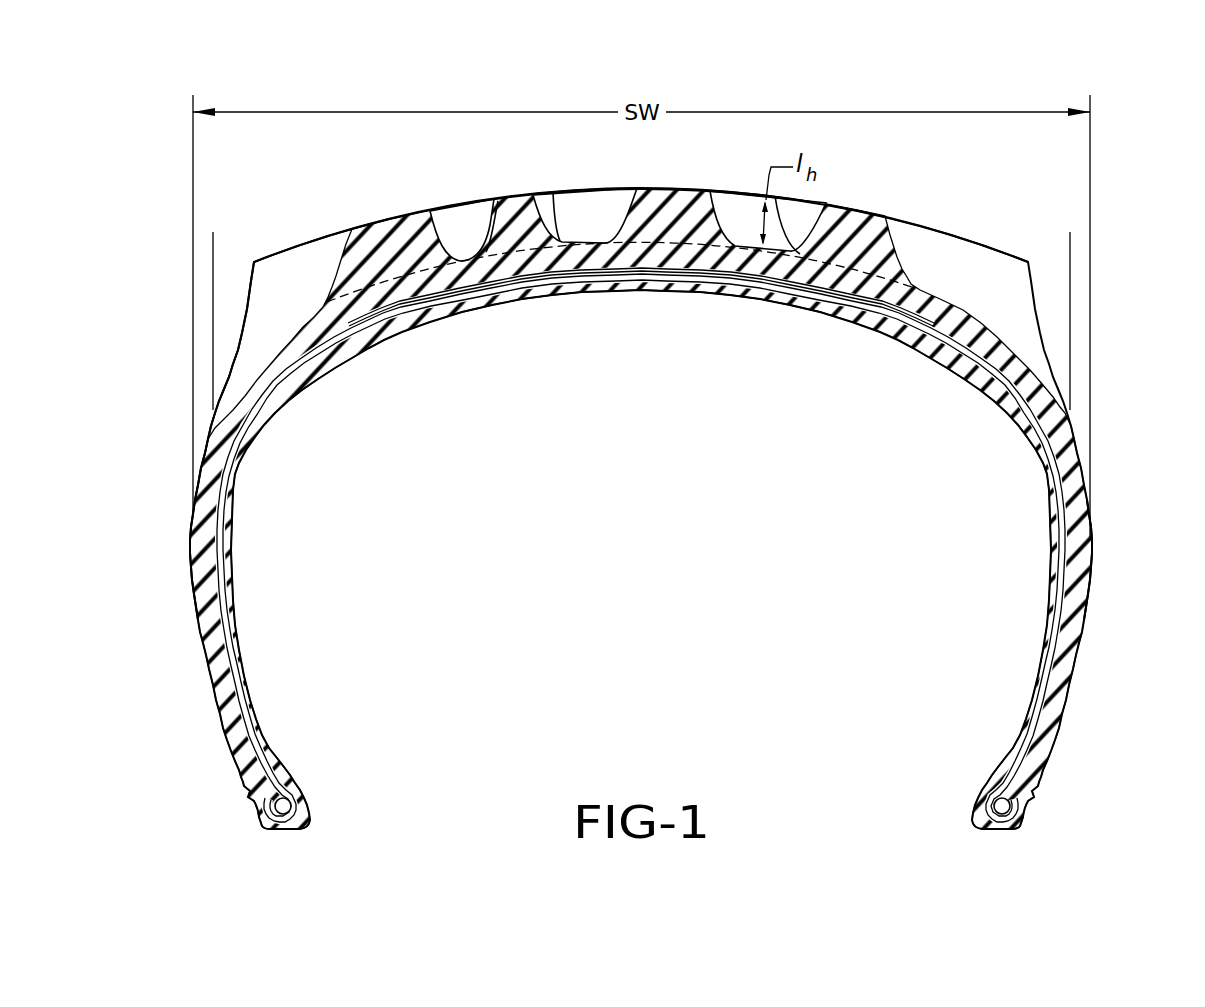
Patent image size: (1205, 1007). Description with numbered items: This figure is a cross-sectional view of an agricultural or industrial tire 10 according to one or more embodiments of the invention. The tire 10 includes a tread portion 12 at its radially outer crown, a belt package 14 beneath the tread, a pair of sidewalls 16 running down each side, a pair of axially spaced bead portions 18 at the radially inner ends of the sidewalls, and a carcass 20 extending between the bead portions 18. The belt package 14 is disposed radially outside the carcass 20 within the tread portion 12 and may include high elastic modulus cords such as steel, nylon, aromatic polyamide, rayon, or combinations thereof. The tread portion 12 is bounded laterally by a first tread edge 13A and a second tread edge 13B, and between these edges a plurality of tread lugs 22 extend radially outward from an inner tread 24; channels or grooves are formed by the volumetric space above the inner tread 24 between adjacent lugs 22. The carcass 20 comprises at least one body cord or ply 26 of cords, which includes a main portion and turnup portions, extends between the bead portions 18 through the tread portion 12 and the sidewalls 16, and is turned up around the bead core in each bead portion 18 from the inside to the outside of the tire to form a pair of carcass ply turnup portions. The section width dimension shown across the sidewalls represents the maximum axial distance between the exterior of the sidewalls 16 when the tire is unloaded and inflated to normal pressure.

The tire 10 is at (1147, 186).
The tread portion 12 is at (658, 181).
The first tread edge 13A is at (1070, 244).
The second tread edge 13B is at (213, 244).
The belt package 14 is at (565, 283).
The sidewall 16 is at (191, 545).
The bead portion 18 is at (238, 772).
The carcass 20 is at (190, 582).
The tread lug 22 is at (396, 234).
The inner tread 24 is at (518, 247).
The ply 26 is at (240, 697).